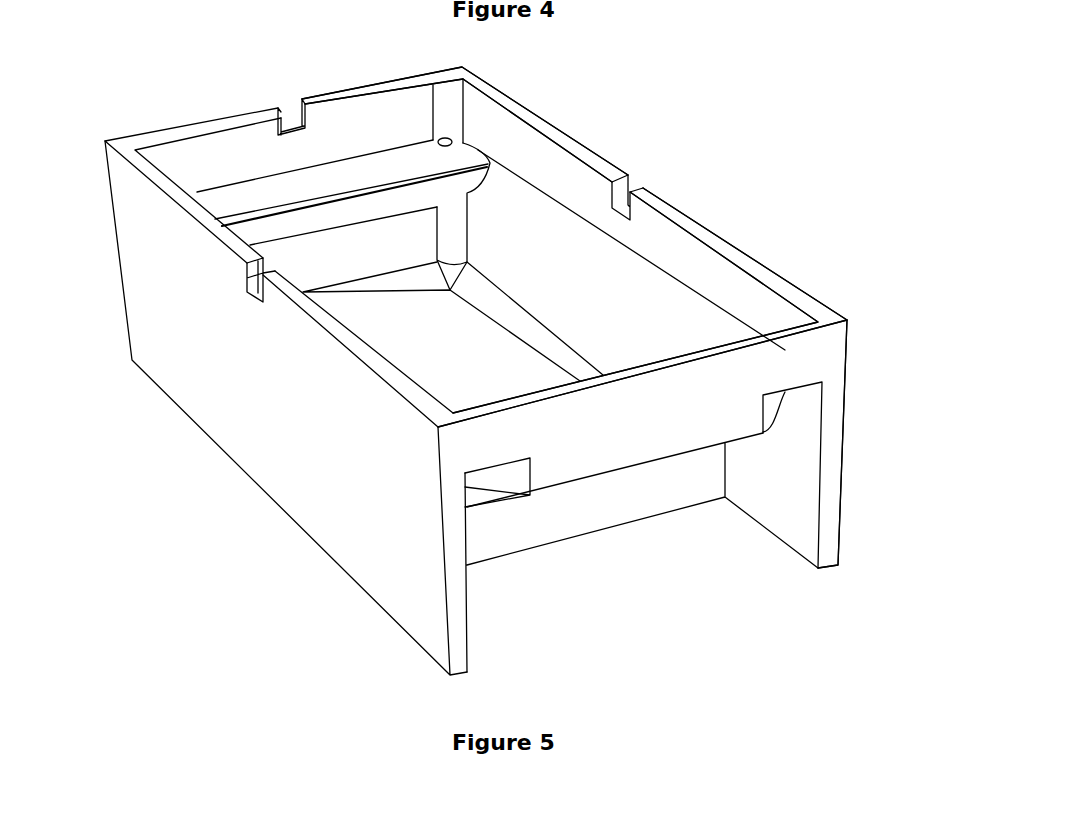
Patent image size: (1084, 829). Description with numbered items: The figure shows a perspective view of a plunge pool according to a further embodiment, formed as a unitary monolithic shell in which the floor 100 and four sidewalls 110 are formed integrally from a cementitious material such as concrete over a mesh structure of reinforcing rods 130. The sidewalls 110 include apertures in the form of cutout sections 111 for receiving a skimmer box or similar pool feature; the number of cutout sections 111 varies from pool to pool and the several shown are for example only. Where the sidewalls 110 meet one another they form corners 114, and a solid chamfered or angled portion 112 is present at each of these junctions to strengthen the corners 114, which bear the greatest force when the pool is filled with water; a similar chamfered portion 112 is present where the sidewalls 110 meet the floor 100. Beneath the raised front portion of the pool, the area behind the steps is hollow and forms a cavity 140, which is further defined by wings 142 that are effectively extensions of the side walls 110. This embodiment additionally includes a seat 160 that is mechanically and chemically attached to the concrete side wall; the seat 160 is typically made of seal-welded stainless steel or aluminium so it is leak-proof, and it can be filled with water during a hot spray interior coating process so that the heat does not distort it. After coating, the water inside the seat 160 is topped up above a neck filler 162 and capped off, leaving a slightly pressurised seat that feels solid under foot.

The floor 100 is at (382, 325).
The sidewalls 110 is at (655, 255).
The cutout sections 111 is at (277, 98).
The chamfered or angled portion 112 is at (447, 95).
The corners 114 is at (455, 58).
The reinforcing rods 130 is at (142, 243).
The cavity 140 is at (700, 602).
The wings 142 is at (797, 523).
The seat 160 is at (490, 163).
The neck filler 162 is at (452, 140).